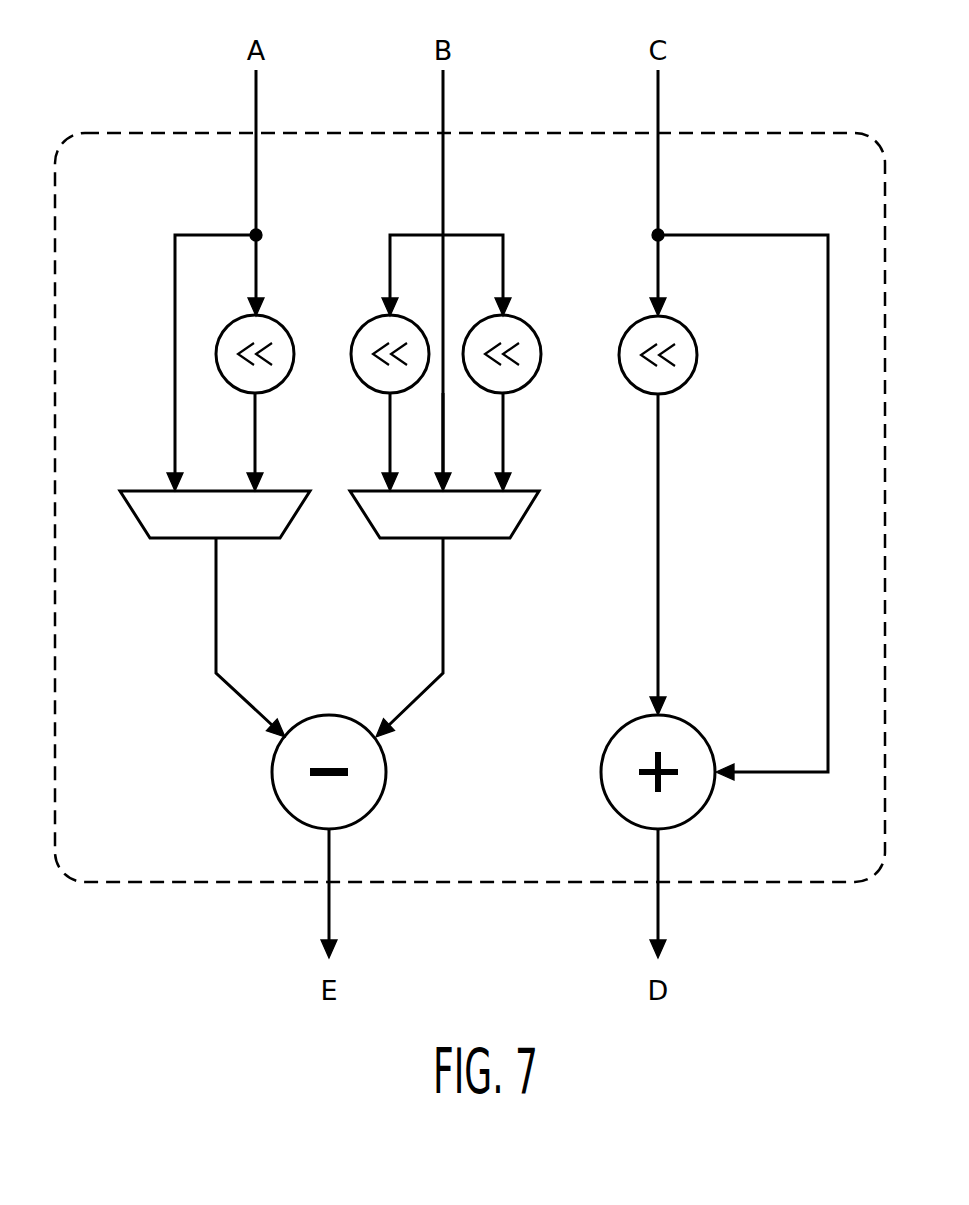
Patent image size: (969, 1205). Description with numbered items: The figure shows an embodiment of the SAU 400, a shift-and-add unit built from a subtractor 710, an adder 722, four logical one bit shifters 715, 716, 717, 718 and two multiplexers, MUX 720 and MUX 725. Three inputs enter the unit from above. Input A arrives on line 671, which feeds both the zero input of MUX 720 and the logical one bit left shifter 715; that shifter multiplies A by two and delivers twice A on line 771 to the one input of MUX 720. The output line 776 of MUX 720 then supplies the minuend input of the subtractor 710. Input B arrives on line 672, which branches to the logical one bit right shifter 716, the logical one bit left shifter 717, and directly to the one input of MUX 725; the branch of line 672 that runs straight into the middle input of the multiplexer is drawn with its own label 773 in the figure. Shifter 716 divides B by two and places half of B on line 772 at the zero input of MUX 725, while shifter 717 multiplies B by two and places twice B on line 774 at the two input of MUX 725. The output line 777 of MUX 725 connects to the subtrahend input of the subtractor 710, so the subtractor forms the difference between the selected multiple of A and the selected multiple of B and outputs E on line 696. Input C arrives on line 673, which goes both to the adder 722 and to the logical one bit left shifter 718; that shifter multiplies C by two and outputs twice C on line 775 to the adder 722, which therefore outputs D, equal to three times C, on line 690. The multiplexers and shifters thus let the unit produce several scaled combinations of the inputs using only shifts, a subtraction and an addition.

The SAU 400 is at (793, 133).
The line 671 is at (256, 97).
The line 672 is at (443, 95).
The line 673 is at (658, 92).
The logical one bit left shifter 715 is at (270, 318).
The logical one bit right shifter 716 is at (372, 322).
The logical one bit left shifter 717 is at (532, 323).
The logical one bit left shifter 718 is at (690, 322).
The line 771 is at (256, 418).
The line 772 is at (390, 445).
The signal line 773 is at (443, 460).
The line 774 is at (503, 447).
The line 775 is at (658, 448).
The MUX 720 is at (265, 540).
The MUX 725 is at (415, 540).
The output line 776 is at (232, 695).
The output line 777 is at (443, 627).
The subtractor 710 is at (386, 772).
The adder 722 is at (608, 742).
The line 696 is at (333, 925).
The line 690 is at (662, 925).